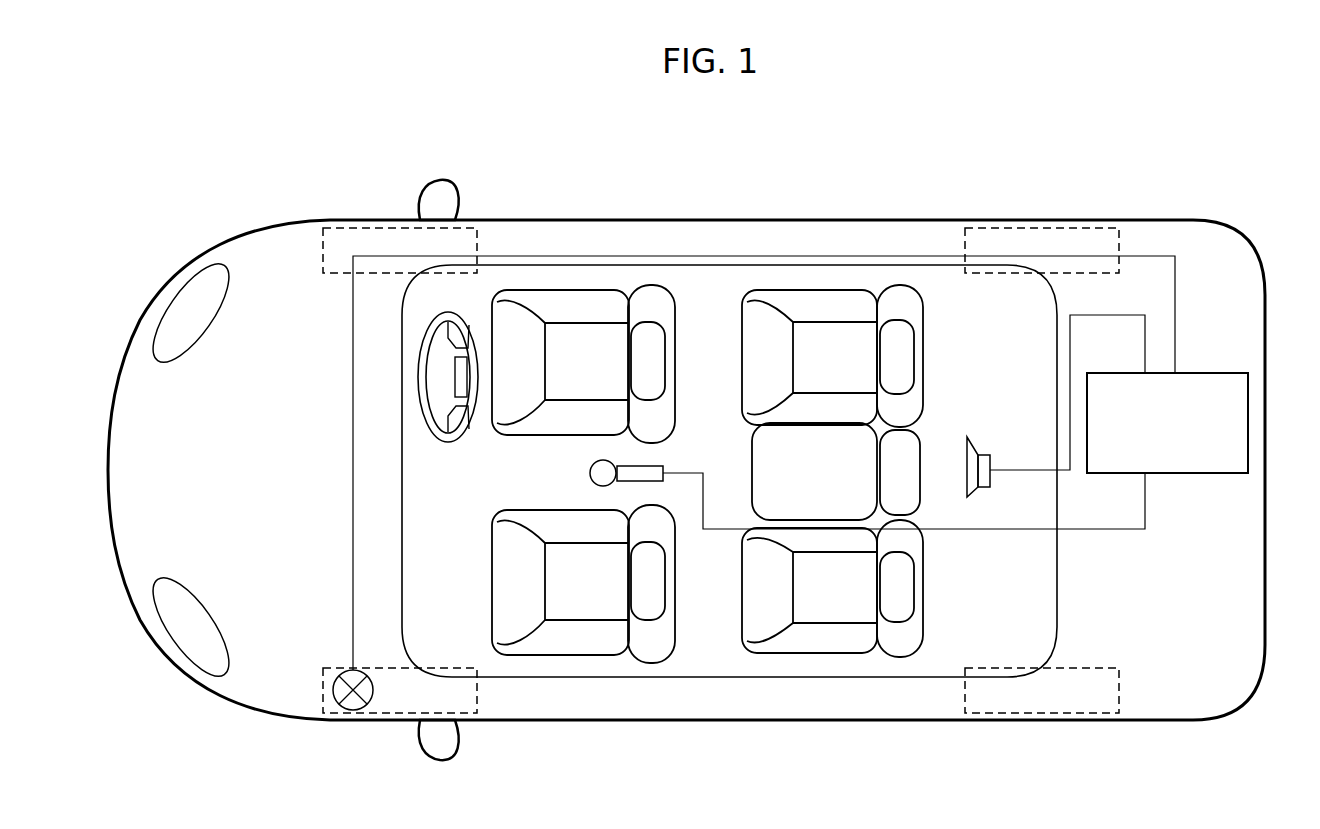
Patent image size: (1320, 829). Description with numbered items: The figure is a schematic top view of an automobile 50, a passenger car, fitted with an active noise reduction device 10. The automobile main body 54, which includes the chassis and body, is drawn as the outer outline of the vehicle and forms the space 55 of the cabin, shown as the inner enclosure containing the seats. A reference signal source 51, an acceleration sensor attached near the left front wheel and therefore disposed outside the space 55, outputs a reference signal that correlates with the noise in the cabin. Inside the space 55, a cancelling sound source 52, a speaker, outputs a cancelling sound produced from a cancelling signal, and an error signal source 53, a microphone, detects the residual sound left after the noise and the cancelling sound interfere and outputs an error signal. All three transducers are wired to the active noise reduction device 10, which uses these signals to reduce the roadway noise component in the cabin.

The active noise reduction device 10 is at (1215, 372).
The automobile 50 is at (1248, 220).
The reference signal source 51 is at (340, 669).
The cancelling sound source 52 is at (970, 440).
The error signal source 53 is at (590, 473).
The automobile main body 54 is at (835, 219).
The space 55 is at (706, 620).